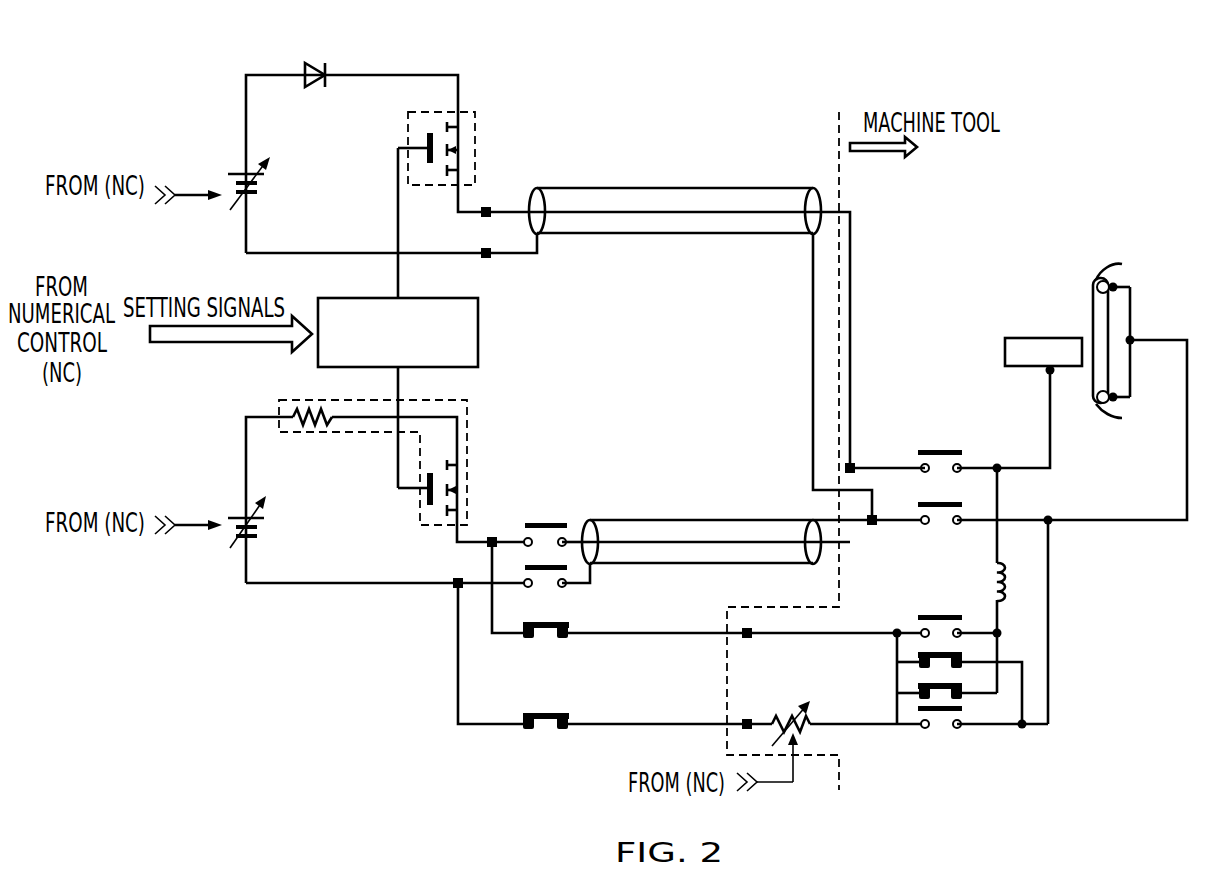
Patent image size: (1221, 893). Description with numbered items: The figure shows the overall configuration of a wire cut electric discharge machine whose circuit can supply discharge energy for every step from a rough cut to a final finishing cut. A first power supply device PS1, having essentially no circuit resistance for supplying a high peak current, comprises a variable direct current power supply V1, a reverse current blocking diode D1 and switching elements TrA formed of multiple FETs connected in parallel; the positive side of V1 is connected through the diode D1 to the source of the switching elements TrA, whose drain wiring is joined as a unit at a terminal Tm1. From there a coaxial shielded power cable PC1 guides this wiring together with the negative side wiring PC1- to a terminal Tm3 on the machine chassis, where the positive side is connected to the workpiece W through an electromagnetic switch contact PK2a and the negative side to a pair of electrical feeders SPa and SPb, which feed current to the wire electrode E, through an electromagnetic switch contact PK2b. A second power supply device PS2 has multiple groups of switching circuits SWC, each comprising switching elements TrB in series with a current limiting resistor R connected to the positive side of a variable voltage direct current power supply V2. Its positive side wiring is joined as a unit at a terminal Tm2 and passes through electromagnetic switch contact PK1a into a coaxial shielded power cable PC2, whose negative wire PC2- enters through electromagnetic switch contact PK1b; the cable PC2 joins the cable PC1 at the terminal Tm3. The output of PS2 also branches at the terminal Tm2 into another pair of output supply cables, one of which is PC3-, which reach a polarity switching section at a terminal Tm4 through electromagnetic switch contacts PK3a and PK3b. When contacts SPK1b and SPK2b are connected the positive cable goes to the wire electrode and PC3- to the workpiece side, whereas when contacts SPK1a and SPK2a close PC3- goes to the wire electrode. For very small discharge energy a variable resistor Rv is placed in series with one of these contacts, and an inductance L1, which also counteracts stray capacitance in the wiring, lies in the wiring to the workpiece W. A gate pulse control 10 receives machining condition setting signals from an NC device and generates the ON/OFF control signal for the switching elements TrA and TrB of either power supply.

The first power supply device PS1 is at (494, 86).
The second power supply device PS2 is at (339, 632).
The reverse current blocking diode D1 is at (325, 60).
The variable direct current power supply V1 is at (268, 180).
The variable voltage direct current power supply V2 is at (268, 527).
The switching elements TrA is at (476, 148).
The switching elements TrB is at (426, 512).
The terminal Tm1 is at (484, 214).
The terminal Tm2 is at (487, 544).
The terminal Tm3 is at (855, 470).
The terminal Tm4 is at (745, 720).
The gate pulse control 10 is at (478, 320).
The coaxial shielded power cable PC1 is at (659, 182).
The negative side wiring PC1- is at (812, 311).
The coaxial shielded power cable PC2 is at (644, 498).
The negative wire PC2- is at (754, 518).
The output supply cable PC3- is at (598, 722).
The switching circuit SWC is at (470, 412).
The current limiting resistor R is at (312, 430).
The electromagnetic switch contact PK1a is at (545, 540).
The electromagnetic switch contact PK1b is at (545, 590).
The electromagnetic switch contact PK2a is at (940, 462).
The electromagnetic switch contact PK2b is at (940, 527).
The electromagnetic switch contact PK3a is at (548, 640).
The electromagnetic switch contact PK3b is at (543, 731).
The electromagnetic switch contact SPK1a is at (940, 631).
The electromagnetic switch contact SPK1b is at (940, 672).
The electromagnetic switch contact SPK2a is at (940, 729).
The electromagnetic switch contact SPK2b is at (940, 700).
The workpiece W is at (1020, 338).
The wire electrode E is at (1092, 314).
The electrical feeder SPa is at (1098, 277).
The electrical feeder SPb is at (1099, 406).
The inductance L1 is at (992, 586).
The variable resistor Rv is at (781, 714).